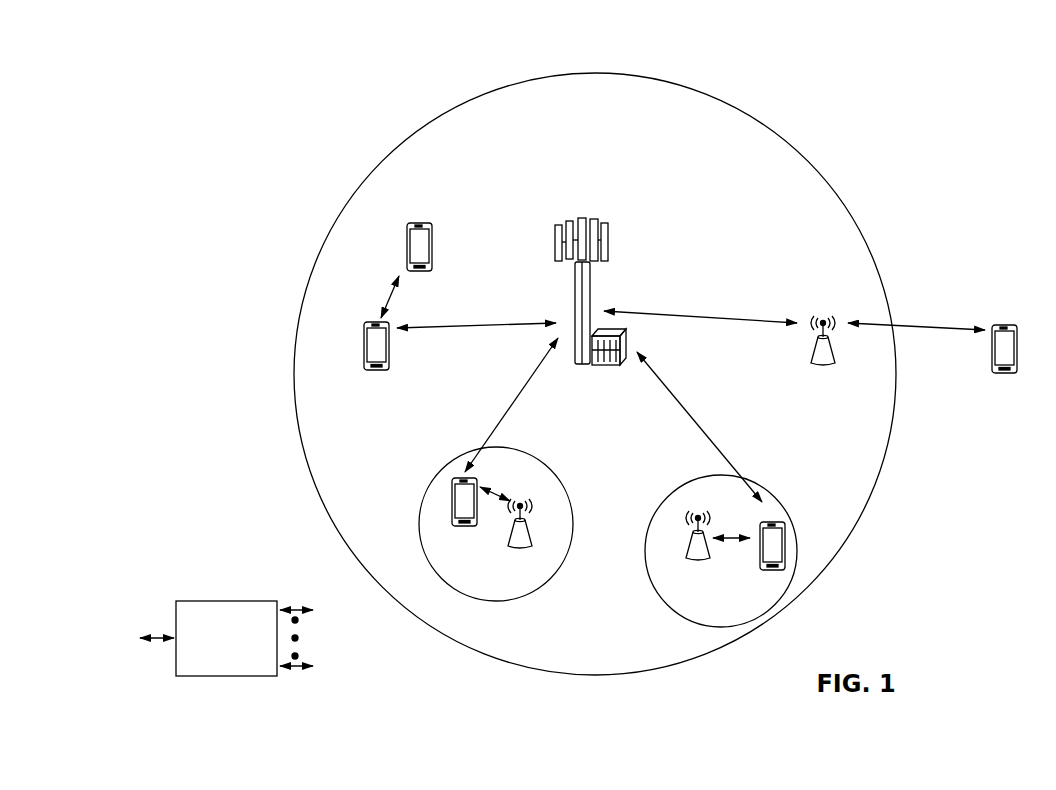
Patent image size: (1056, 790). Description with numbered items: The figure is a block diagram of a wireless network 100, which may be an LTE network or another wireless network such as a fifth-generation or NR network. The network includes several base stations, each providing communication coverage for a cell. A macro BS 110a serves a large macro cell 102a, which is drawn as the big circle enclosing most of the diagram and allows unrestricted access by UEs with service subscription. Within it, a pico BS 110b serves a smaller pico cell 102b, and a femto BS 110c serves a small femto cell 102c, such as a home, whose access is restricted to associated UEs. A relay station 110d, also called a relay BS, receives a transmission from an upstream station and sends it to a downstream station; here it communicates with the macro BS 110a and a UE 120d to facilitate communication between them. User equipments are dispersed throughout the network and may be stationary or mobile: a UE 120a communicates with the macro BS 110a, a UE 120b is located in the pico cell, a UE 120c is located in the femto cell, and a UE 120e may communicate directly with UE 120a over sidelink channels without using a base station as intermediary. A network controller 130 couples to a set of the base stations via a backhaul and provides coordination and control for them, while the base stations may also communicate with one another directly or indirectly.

The wireless network 100 is at (212, 68).
The macro cell 102a is at (797, 150).
The pico cell 102b is at (559, 481).
The femto cell 102c is at (680, 491).
The macro BS 110a is at (586, 216).
The pico BS 110b is at (533, 546).
The femto BS 110c is at (688, 556).
The relay station 110d is at (823, 316).
The UE 120a is at (362, 345).
The UE 120b is at (460, 527).
The UE 120c is at (766, 570).
The UE 120d is at (1010, 326).
The UE 120e is at (406, 240).
The network controller 130 is at (225, 600).